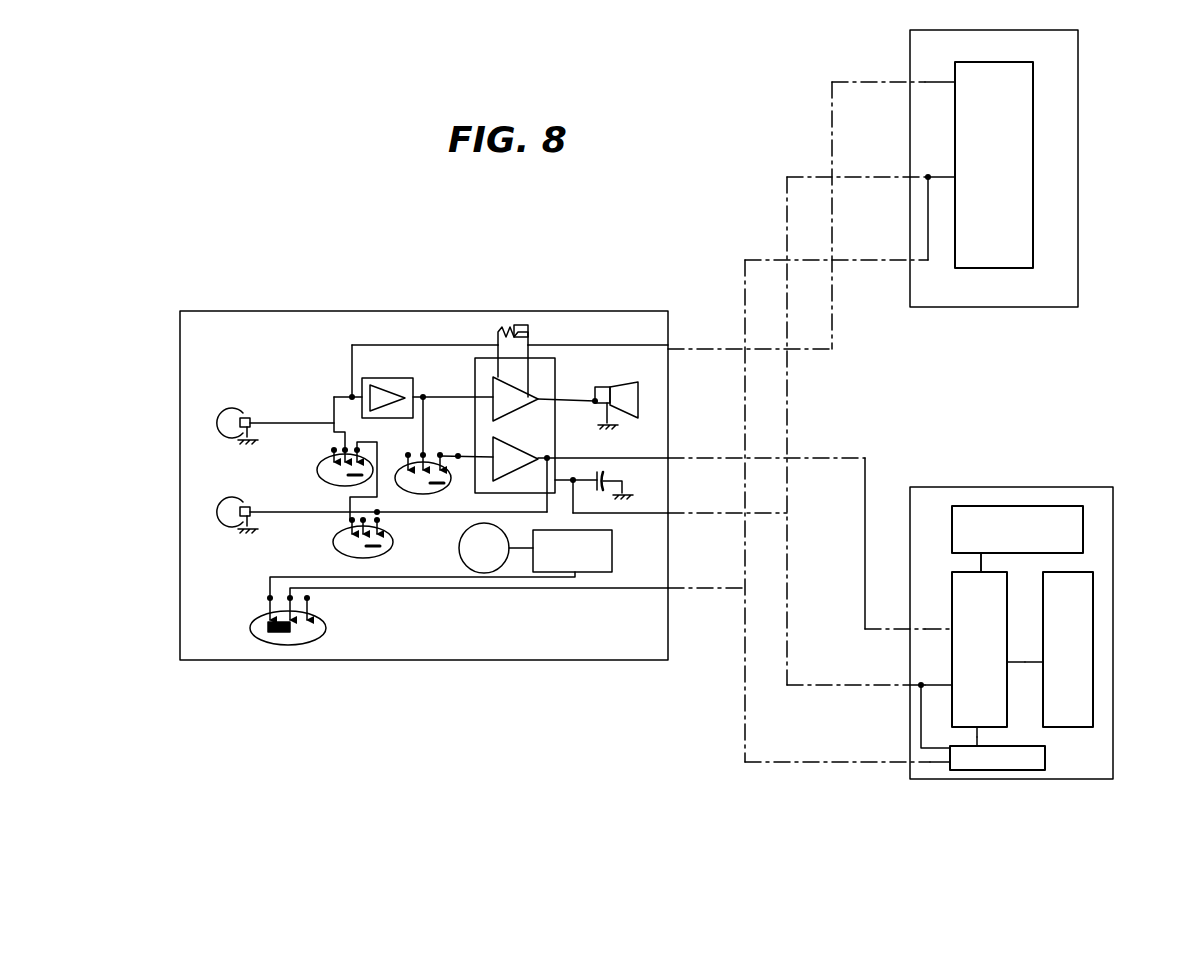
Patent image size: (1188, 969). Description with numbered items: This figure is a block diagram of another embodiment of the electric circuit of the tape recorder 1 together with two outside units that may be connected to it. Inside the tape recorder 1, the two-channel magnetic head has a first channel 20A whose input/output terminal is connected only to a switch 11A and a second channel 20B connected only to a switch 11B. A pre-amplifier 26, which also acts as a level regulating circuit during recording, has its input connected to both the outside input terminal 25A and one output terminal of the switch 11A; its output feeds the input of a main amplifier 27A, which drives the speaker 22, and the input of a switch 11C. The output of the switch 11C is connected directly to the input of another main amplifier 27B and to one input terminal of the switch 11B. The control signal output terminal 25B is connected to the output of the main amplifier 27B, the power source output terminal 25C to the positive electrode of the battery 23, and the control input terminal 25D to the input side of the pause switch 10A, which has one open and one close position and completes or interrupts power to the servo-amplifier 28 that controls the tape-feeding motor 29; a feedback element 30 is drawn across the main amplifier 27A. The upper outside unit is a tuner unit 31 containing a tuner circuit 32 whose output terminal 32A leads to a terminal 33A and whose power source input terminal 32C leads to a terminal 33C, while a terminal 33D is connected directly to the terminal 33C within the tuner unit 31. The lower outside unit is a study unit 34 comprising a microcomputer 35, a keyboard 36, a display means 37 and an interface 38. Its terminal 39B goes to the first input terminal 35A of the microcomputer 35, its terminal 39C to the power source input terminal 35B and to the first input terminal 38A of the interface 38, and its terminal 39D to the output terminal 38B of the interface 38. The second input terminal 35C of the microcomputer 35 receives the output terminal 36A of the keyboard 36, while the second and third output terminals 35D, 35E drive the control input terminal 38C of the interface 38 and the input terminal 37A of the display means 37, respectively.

The tape recorder 1 is at (265, 311).
The pause switch 10A is at (326, 628).
The switch 11A is at (330, 482).
The switch 11B is at (393, 542).
The switch 11C is at (399, 470).
The first channel 20A is at (231, 408).
The second channel 20B is at (231, 497).
The speaker 22 is at (640, 397).
The battery 23 is at (612, 472).
The outside input terminal 25A is at (672, 345).
The control signal output terminal 25B is at (670, 458).
The power source output terminal 25C is at (690, 507).
The control input terminal 25D is at (670, 588).
The pre-amplifier 26 is at (413, 386).
The main amplifier 27A is at (527, 400).
The main amplifier 27B is at (527, 460).
The servo-amplifier 28 is at (612, 550).
The motor 29 is at (484, 573).
The feedback resistor 30 is at (528, 327).
The tuner unit 31 is at (1080, 284).
The tuner circuit 32 is at (1010, 175).
The output terminal 32A is at (952, 85).
The power source input terminal 32C is at (952, 175).
The terminal 33A is at (906, 78).
The terminal 33C is at (908, 178).
The terminal 33D is at (908, 263).
The study unit 34 is at (1048, 784).
The microcomputer 35 is at (986, 672).
The first input terminal 35A is at (952, 627).
The power source input terminal 35B is at (950, 685).
The second input terminal 35C is at (1010, 660).
The second output terminal 35D is at (977, 736).
The third output terminal 35E is at (981, 572).
The keyboard 36 is at (1081, 675).
The output terminal 36A is at (1042, 662).
The display means 37 is at (1031, 546).
The input terminal 37A is at (985, 556).
The interface 38 is at (1045, 760).
The first input terminal 38A is at (948, 748).
The output terminal 38B is at (948, 764).
The second input terminal 38C is at (978, 746).
The terminal 39B is at (910, 628).
The terminal 39C is at (910, 685).
The terminal 39D is at (937, 760).